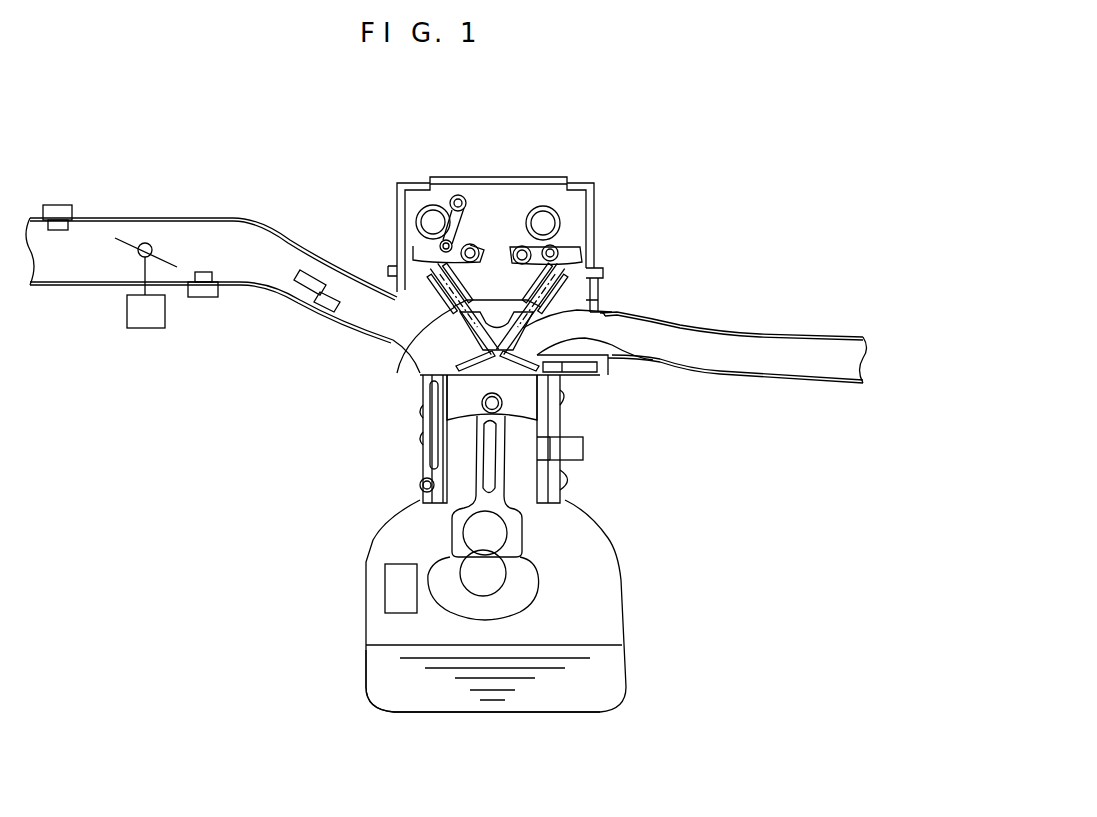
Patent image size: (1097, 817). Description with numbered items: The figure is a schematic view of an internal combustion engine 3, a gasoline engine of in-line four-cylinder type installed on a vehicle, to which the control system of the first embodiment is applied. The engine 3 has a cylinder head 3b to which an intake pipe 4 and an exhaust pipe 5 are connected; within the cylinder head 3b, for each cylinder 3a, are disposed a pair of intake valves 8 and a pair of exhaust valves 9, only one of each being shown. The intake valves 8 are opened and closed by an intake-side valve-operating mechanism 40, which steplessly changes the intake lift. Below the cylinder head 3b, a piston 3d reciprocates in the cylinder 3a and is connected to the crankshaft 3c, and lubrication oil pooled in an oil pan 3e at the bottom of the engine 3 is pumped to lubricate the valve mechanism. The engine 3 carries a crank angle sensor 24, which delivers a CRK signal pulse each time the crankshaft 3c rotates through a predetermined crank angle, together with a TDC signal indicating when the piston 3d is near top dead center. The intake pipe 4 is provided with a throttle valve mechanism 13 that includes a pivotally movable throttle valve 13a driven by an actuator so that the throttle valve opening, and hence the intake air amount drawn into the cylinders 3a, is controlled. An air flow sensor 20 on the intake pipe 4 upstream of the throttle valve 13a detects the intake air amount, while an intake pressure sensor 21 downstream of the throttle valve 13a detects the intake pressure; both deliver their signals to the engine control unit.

The internal combustion engine 3 is at (584, 172).
The cylinder 3a is at (445, 466).
The cylinder head 3b is at (598, 285).
The crankshaft 3c is at (503, 587).
The piston 3d is at (527, 403).
The oil pan 3e is at (365, 668).
The intake pipe 4 is at (70, 286).
The exhaust pipe 5 is at (800, 380).
The intake valve 8 is at (430, 325).
The exhaust valve 9 is at (580, 345).
The throttle valve mechanism 13 is at (145, 328).
The throttle valve 13a is at (120, 245).
The air flow sensor 20 is at (58, 204).
The intake pressure sensor 21 is at (200, 298).
The crank angle sensor 24 is at (385, 598).
The intake-side valve-operating mechanism 40 is at (408, 205).